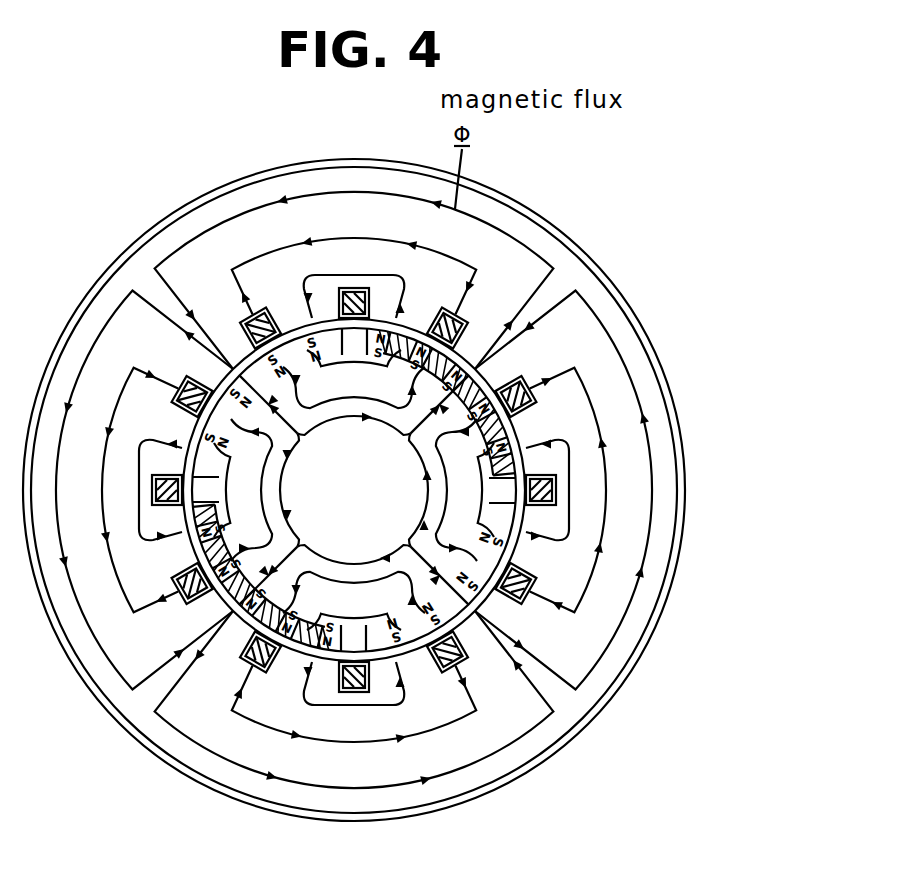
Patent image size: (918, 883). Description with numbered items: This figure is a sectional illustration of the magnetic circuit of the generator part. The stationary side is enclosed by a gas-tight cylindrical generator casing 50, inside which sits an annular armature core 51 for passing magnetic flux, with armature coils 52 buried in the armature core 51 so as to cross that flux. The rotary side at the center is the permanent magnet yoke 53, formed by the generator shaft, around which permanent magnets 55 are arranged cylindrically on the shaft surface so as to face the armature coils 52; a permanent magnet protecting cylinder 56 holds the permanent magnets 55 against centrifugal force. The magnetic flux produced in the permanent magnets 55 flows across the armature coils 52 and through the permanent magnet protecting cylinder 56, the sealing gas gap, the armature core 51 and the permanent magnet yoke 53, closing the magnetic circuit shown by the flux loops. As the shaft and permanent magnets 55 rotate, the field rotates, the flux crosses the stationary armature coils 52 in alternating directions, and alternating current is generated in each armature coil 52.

The generator casing 50 is at (391, 158).
The armature core 51 is at (470, 237).
The armature coil 52 is at (473, 370).
The permanent magnet yoke 53 is at (360, 504).
The permanent magnets 55 is at (507, 443).
The permanent magnet protecting cylinder 56 is at (524, 380).